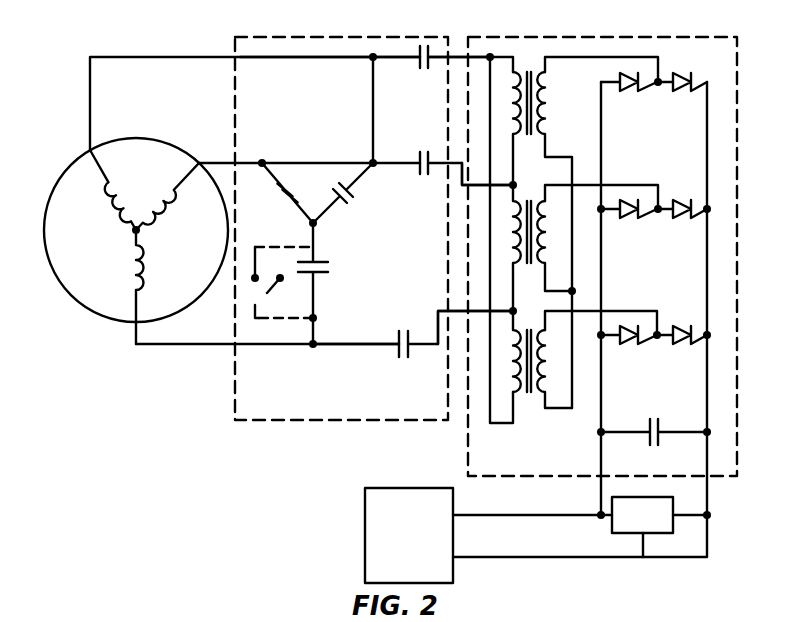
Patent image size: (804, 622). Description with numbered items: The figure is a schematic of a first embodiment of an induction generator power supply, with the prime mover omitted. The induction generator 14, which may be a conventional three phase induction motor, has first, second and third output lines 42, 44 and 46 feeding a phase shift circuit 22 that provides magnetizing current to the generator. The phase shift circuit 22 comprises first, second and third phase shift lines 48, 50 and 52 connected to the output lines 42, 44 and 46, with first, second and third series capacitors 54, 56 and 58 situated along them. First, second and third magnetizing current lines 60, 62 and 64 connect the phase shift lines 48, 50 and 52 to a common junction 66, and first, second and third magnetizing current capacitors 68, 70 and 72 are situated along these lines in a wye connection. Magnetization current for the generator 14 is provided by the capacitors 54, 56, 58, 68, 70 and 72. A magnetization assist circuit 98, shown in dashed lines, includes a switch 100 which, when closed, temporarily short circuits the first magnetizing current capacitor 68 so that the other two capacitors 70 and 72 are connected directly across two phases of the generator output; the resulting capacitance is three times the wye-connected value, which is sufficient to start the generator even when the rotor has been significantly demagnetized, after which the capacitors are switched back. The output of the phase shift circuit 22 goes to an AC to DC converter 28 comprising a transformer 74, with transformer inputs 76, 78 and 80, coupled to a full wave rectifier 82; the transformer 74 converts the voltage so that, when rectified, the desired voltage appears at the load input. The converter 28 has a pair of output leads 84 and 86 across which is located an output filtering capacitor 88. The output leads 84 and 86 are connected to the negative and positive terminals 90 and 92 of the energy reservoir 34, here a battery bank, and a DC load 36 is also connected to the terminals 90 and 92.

The induction generator 14 is at (84, 324).
The first output line 42 is at (127, 57).
The second output line 44 is at (222, 162).
The third output line 46 is at (138, 345).
The phase shift circuit 22 is at (300, 423).
The first phase shift line 48 is at (302, 57).
The first series capacitor 54 is at (413, 50).
The second series capacitor 56 is at (419, 148).
The third series capacitor 58 is at (394, 333).
The third magnetizing current line 64 is at (372, 73).
The second magnetizing current line 62 is at (266, 158).
The second phase shift line 50 is at (347, 158).
The second magnetizing current capacitor 70 is at (287, 176).
The third magnetizing current capacitor 72 is at (356, 188).
The common junction 66 is at (315, 228).
The first magnetizing current capacitor 68 is at (318, 274).
The first magnetizing current line 60 is at (306, 336).
The third phase shift line 52 is at (372, 347).
The magnetization assist circuit 98 is at (254, 292).
The switch 100 is at (279, 298).
The transformer input 80 is at (452, 311).
The transformer input 78 is at (462, 196).
The transformer input 76 is at (465, 57).
The AC to DC converter 28 is at (465, 445).
The transformer 74 is at (549, 50).
The full wave rectifier 82 is at (713, 66).
The output filtering capacitor 88 is at (656, 418).
The output lead 84 is at (600, 490).
The output lead 86 is at (708, 492).
The energy reservoir 34 is at (661, 545).
The negative terminal 90 is at (600, 520).
The positive terminal 92 is at (675, 517).
The DC load 36 is at (365, 512).